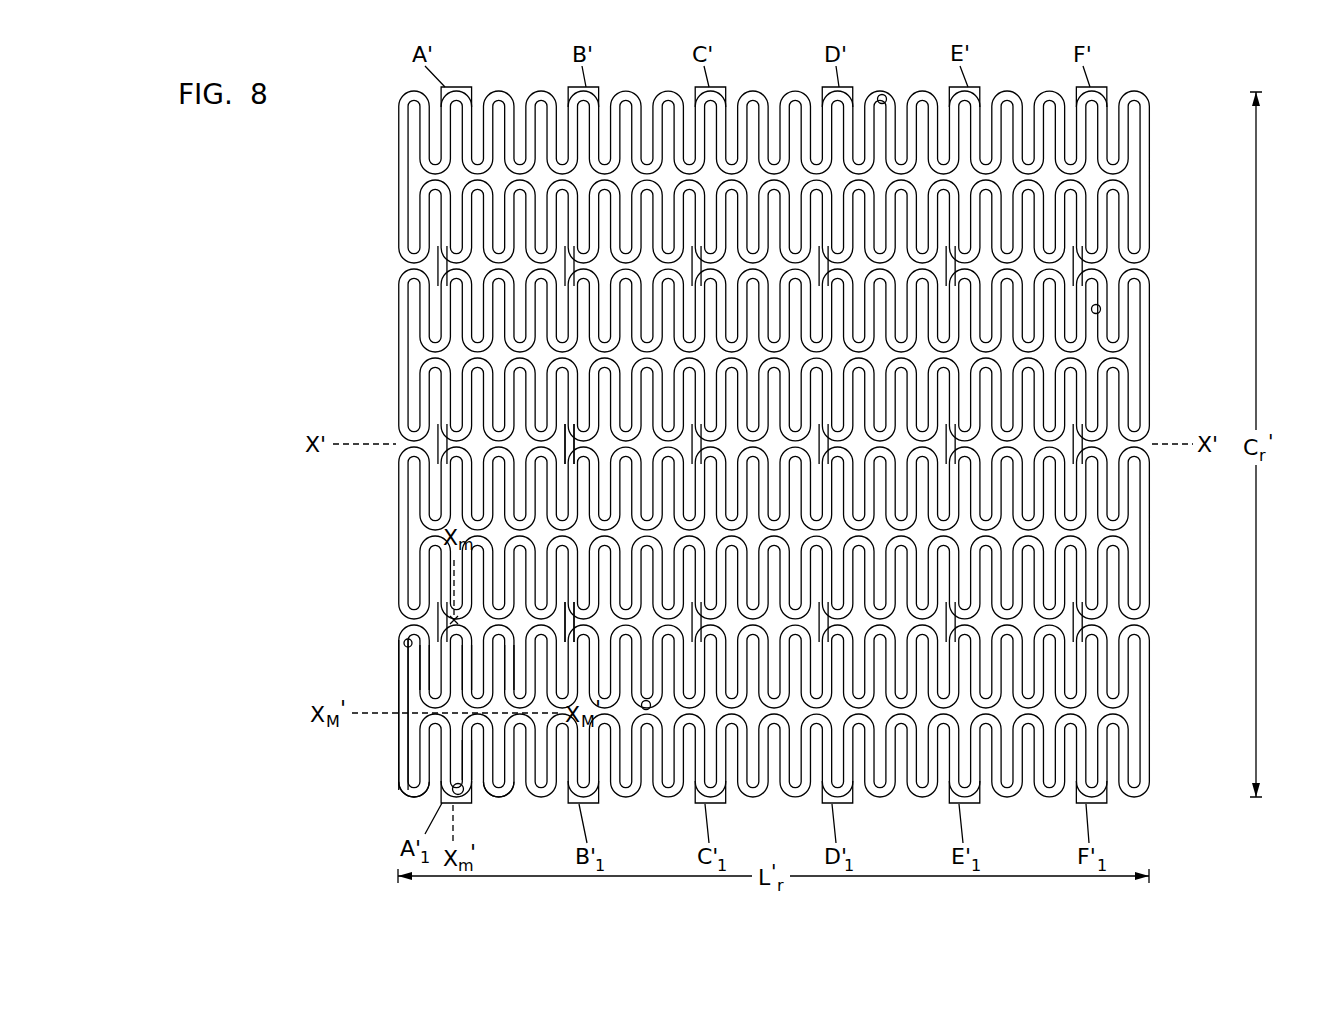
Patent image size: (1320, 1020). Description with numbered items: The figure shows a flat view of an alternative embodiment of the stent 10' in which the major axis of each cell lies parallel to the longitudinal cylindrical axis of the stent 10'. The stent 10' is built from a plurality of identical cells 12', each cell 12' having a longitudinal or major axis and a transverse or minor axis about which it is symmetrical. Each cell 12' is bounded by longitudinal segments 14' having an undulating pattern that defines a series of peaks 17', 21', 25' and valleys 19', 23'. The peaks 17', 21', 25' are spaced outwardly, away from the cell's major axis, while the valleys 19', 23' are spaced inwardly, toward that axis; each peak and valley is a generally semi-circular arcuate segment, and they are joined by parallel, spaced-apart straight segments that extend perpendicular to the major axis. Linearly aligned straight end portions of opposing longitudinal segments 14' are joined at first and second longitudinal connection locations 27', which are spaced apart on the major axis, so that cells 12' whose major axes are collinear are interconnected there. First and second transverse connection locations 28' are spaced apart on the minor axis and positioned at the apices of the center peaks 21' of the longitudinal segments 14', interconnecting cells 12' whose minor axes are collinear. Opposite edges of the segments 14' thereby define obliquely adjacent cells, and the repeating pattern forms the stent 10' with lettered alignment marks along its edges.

The stent 10' is at (703, 445).
The cell 12' is at (782, 346).
The longitudinal segment 14' is at (360, 729).
The peak 17' is at (514, 825).
The valley 19' is at (435, 652).
The center peak 21' is at (482, 793).
The valley 23' is at (479, 652).
The peak 25' is at (391, 816).
The longitudinal connection location 27' is at (617, 670).
The transverse connection location 28' is at (615, 533).